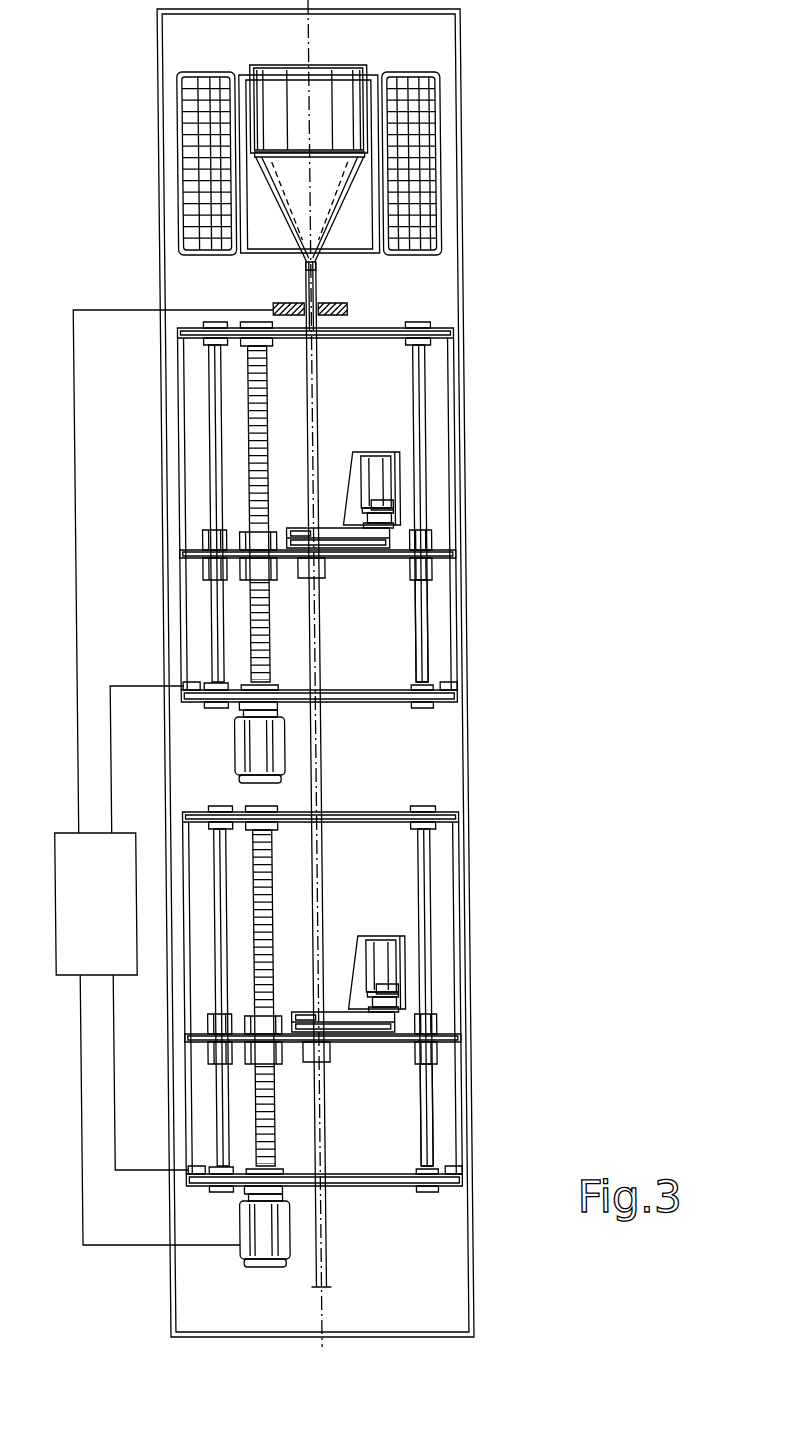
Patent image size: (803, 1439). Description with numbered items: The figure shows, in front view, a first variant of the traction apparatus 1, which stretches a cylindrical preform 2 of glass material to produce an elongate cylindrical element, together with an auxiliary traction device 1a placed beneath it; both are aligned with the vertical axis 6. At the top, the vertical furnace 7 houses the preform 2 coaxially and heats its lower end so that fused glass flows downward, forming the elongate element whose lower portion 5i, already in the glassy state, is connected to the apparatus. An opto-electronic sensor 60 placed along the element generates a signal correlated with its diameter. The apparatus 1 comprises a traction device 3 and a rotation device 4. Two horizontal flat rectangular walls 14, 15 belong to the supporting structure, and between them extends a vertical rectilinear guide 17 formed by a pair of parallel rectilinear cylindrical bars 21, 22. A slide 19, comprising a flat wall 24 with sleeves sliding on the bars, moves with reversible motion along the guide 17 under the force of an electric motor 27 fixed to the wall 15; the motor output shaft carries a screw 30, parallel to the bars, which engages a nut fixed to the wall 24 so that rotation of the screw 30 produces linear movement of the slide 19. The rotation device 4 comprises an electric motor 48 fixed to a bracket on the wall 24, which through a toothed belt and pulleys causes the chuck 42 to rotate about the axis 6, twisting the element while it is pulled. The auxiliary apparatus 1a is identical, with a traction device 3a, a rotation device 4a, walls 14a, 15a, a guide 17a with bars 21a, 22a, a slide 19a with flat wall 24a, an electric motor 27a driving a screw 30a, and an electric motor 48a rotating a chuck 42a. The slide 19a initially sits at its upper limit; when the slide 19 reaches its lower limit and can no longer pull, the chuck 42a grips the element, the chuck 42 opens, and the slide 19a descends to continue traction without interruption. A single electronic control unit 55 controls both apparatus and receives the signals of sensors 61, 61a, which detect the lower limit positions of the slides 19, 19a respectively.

The traction apparatus 1 is at (473, 530).
The auxiliary traction device 1a is at (374, 998).
The cylindrical preform 2 is at (292, 93).
The traction device 3 is at (214, 722).
The traction device 3a is at (201, 1252).
The rotation device 4 is at (396, 441).
The rotation device 4a is at (434, 900).
The lower portion 5i is at (309, 768).
The vertical axis 6 is at (312, 36).
The vertical furnace 7 is at (411, 118).
The horizontal flat rectangular wall 14 is at (372, 330).
The horizontal flat rectangular wall 14a is at (320, 788).
The horizontal flat rectangular wall 15 is at (343, 694).
The horizontal flat rectangular wall 15a is at (324, 1207).
The vertical rectilinear guide 17 is at (431, 642).
The vertical rectilinear guide 17a is at (487, 1115).
The slide 19 is at (428, 508).
The slide 19a is at (477, 1015).
The rectilinear cylindrical bar 21 is at (207, 455).
The rectilinear cylindrical bar 21a is at (174, 977).
The rectilinear cylindrical bar 22 is at (419, 405).
The rectilinear cylindrical bar 22a is at (480, 997).
The flat wall 24 is at (354, 560).
The flat wall 24a is at (323, 1058).
The electric motor 27 is at (249, 762).
The electric motor 27a is at (255, 1261).
The screw 30 is at (250, 420).
The screw 30a is at (324, 998).
The chuck 42 is at (321, 556).
The chuck 42a is at (344, 1081).
The electric motor 48 is at (366, 470).
The electric motor 48a is at (371, 950).
The electronic control unit 55 is at (64, 863).
The opto-electronic sensor 60 is at (330, 297).
The sensor 61 is at (443, 680).
The sensor 61a is at (502, 1160).